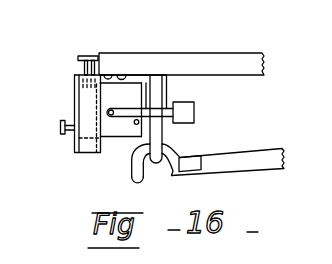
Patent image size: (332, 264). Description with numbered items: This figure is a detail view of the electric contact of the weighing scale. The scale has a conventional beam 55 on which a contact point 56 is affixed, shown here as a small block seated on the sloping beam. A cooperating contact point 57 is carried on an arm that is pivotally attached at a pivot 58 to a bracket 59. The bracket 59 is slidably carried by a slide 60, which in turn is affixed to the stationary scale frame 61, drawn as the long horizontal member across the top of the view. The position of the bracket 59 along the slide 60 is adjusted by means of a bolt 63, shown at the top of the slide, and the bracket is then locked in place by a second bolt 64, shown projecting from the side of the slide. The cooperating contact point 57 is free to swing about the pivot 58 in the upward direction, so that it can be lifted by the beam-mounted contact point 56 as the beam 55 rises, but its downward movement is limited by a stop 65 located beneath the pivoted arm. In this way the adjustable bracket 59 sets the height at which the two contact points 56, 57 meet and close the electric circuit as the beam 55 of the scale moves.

The beam 55 is at (265, 153).
The contact point 56 is at (205, 153).
The cooperating contact point 57 is at (190, 110).
The pivot 58 is at (109, 112).
The bracket 59 is at (117, 133).
The slide 60 is at (85, 145).
The stationary scale frame 61 is at (208, 62).
The bolt 63 is at (88, 55).
The bolt 64 is at (60, 128).
The stop 65 is at (135, 124).